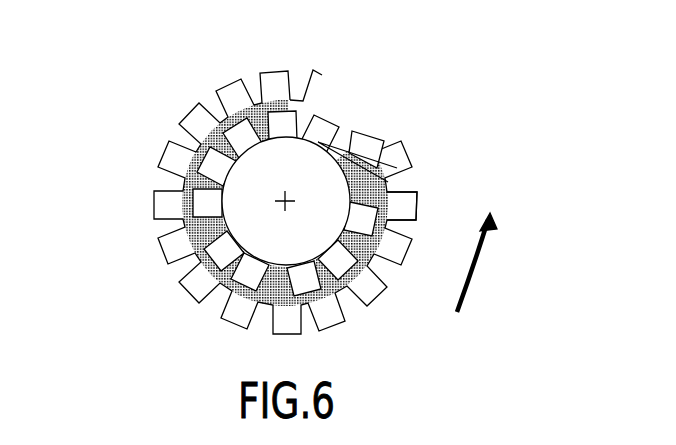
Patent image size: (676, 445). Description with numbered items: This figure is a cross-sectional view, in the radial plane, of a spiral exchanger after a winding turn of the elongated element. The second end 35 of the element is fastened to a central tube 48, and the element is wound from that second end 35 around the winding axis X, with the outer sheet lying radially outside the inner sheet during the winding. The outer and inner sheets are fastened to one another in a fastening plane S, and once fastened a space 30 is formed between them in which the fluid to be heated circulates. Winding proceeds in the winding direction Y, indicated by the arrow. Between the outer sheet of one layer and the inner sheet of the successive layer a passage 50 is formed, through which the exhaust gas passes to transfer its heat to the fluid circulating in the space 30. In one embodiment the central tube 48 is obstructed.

The space 30 is at (183, 208).
The second end 35 is at (338, 124).
The central tube 48 is at (320, 192).
The passage 50 is at (413, 196).
The fastening plane S is at (173, 174).
The winding axis X is at (285, 203).
The winding direction Y is at (478, 262).